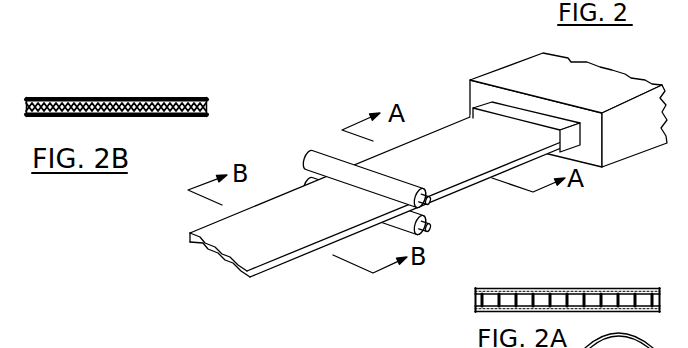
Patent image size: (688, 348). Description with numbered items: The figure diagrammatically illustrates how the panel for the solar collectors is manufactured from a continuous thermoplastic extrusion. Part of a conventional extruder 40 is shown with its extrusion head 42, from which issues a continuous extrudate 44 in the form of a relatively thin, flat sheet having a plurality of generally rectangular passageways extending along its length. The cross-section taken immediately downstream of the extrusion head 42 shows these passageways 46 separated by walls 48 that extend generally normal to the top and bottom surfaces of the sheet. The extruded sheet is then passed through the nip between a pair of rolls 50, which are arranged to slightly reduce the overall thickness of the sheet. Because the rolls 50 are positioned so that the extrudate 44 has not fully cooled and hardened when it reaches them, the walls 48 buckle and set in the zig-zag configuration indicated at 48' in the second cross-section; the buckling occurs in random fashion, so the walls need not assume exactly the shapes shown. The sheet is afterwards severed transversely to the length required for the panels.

In FIG. 2, the extruder 40 is at (515, 75).
In FIG. 2, the extrusion head 42 is at (537, 113).
In FIG. 2, the extrudate 44 is at (378, 192).
In FIG. 2B, the extrudate 44 is at (175, 86).
In FIG. 2A, the extrudate 44 is at (625, 265).
In FIG. 2B, the passageways 46 is at (143, 97).
In FIG. 2A, the passageways 46 is at (495, 285).
In FIG. 2A, the walls 48 is at (567, 280).
In FIG. 2B, the buckled walls 48' is at (116, 127).
In FIG. 2, the rolls 50 is at (433, 215).